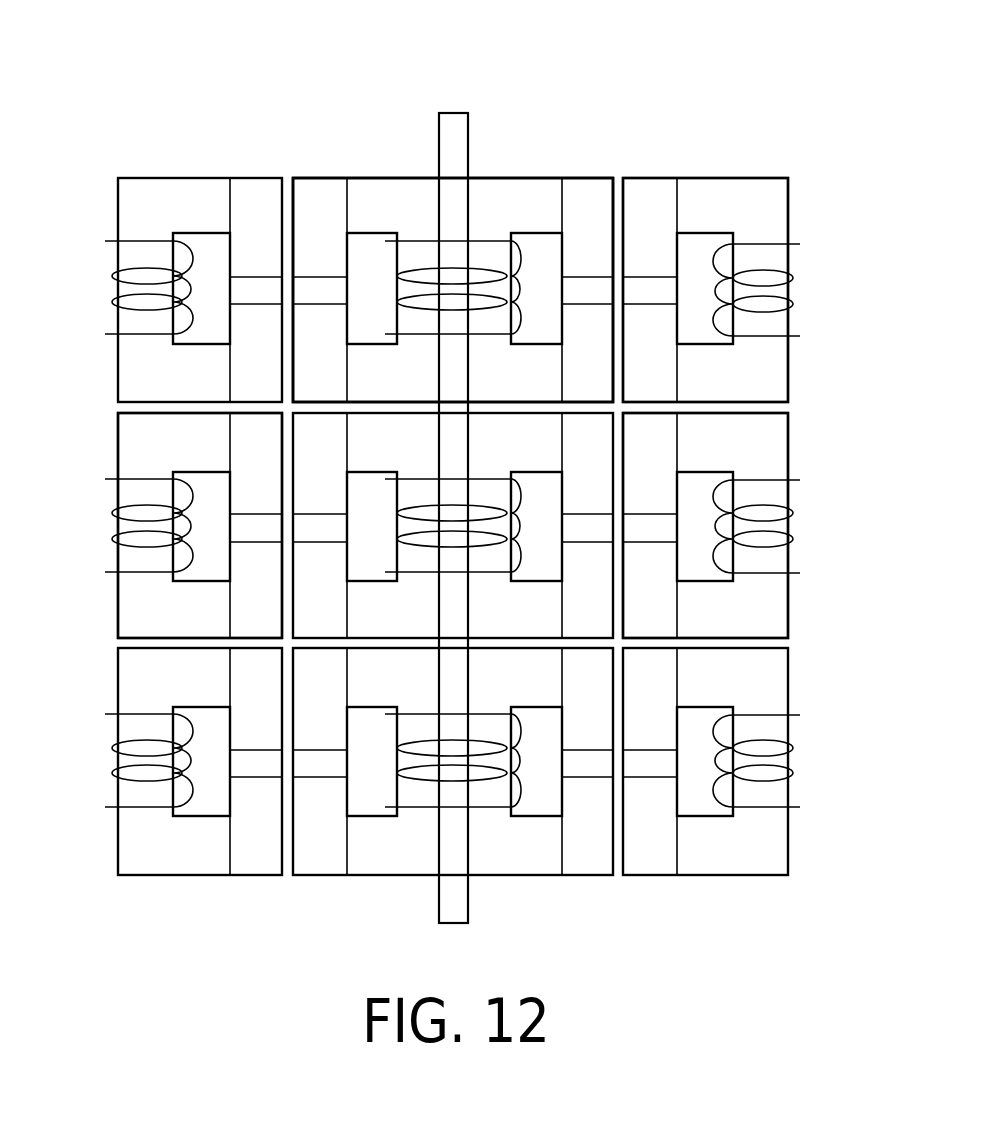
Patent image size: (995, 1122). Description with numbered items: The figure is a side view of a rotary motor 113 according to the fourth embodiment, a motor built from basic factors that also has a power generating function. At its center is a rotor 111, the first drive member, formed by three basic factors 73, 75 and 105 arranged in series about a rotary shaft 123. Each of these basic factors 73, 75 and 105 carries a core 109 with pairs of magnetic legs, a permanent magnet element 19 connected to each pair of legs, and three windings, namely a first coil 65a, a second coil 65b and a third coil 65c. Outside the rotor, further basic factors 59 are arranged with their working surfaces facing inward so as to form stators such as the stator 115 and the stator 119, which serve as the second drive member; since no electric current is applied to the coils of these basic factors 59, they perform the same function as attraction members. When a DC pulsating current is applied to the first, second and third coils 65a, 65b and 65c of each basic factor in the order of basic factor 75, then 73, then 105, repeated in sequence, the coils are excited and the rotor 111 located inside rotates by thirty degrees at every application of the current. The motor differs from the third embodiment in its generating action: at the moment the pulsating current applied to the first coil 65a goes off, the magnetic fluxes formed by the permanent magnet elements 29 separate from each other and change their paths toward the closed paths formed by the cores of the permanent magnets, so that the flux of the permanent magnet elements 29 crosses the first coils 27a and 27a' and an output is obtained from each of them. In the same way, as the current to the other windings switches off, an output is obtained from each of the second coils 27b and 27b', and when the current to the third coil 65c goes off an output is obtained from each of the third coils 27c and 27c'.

The rotor 111 is at (598, 82).
The rotary motor 113 is at (533, 158).
The core 109 is at (392, 178).
The basic factor 73 is at (490, 178).
The rotary shaft 123 is at (455, 902).
The basic factor 75 is at (535, 407).
The stator 115 is at (794, 410).
The basic factor 105 is at (538, 640).
The stator 119 is at (118, 455).
The basic factor 59 is at (172, 177).
The permanent magnet element 19 is at (258, 178).
The permanent magnet element 29 is at (229, 292).
The first coil 65a is at (487, 247).
The second coil 65b is at (487, 482).
The third coil 65c is at (487, 717).
The first coil 27a is at (124, 261).
The second coil 27b is at (122, 525).
The third coil 27c is at (126, 760).
The first coil 27a' is at (787, 260).
The second coil 27b' is at (795, 526).
The third coil 27c' is at (795, 761).